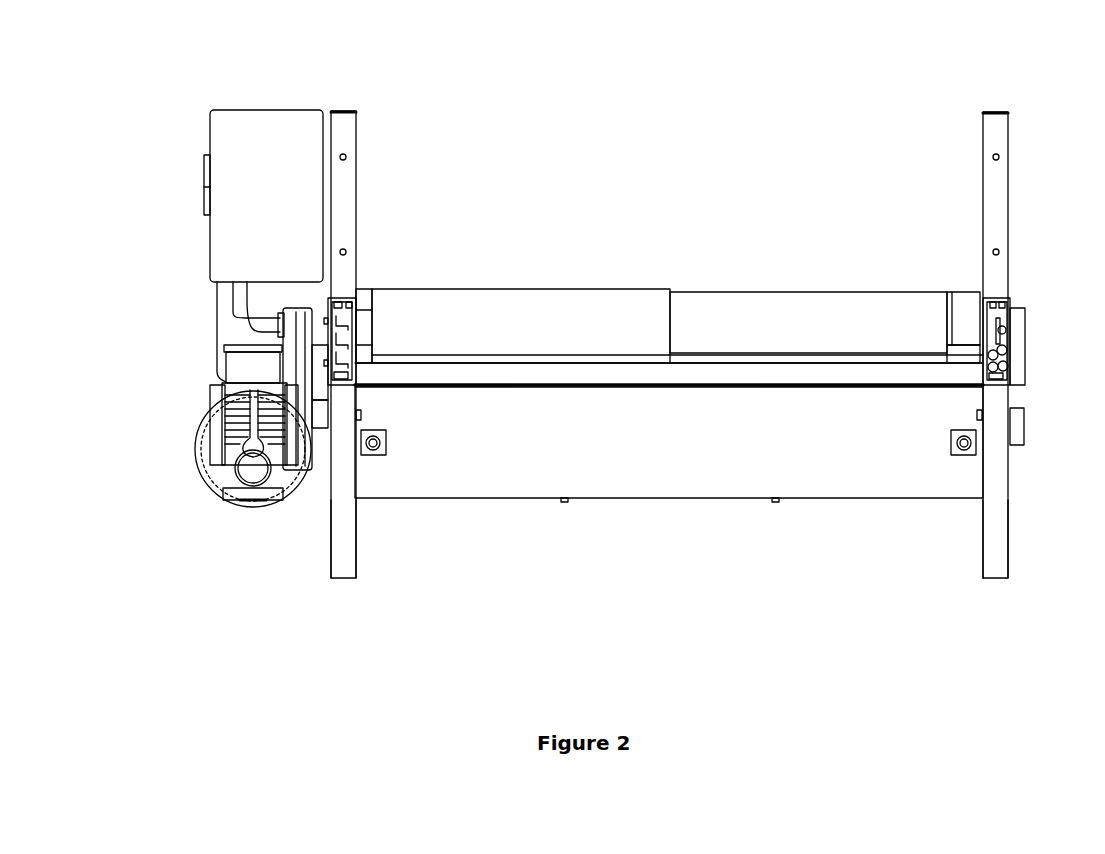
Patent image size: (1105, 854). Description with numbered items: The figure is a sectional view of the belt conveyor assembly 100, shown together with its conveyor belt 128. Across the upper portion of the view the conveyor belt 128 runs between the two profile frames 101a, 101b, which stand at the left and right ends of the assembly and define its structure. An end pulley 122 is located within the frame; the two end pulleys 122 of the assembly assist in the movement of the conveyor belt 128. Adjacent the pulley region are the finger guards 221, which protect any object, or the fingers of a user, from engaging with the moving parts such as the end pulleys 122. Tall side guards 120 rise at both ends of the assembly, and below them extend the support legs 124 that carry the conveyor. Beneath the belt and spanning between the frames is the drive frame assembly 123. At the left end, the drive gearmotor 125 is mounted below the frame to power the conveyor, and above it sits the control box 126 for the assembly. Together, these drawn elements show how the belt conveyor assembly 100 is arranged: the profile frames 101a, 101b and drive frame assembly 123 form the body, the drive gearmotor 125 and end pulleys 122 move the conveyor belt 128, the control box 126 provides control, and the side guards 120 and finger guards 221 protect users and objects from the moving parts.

The belt conveyor assembly 100 is at (168, 378).
The side guards 120 is at (340, 110).
The support legs 124 is at (338, 508).
The control box 126 is at (263, 196).
The drive gearmotor 125 is at (258, 500).
The conveyor belt 128 is at (652, 287).
The end pulley 122 is at (765, 298).
The finger guards 221 is at (360, 297).
The profile frame 101a is at (333, 297).
The profile frame 101b is at (997, 292).
The drive frame assembly 123 is at (689, 444).